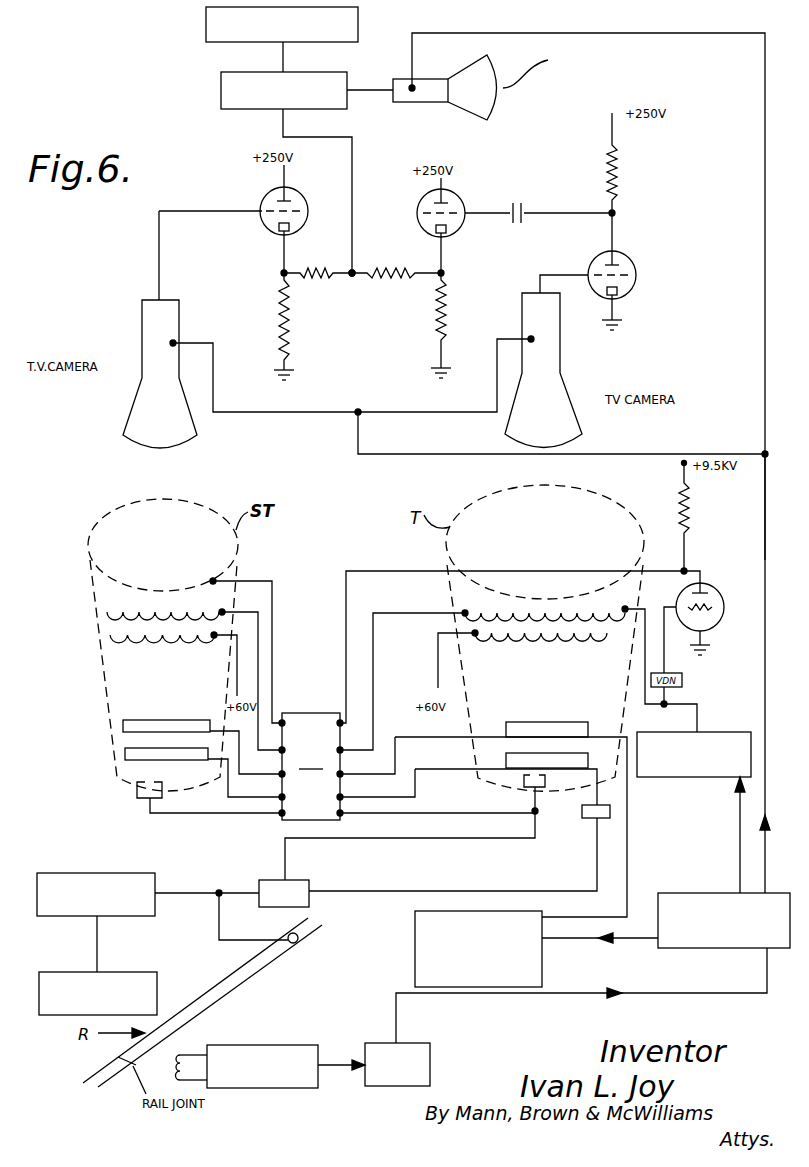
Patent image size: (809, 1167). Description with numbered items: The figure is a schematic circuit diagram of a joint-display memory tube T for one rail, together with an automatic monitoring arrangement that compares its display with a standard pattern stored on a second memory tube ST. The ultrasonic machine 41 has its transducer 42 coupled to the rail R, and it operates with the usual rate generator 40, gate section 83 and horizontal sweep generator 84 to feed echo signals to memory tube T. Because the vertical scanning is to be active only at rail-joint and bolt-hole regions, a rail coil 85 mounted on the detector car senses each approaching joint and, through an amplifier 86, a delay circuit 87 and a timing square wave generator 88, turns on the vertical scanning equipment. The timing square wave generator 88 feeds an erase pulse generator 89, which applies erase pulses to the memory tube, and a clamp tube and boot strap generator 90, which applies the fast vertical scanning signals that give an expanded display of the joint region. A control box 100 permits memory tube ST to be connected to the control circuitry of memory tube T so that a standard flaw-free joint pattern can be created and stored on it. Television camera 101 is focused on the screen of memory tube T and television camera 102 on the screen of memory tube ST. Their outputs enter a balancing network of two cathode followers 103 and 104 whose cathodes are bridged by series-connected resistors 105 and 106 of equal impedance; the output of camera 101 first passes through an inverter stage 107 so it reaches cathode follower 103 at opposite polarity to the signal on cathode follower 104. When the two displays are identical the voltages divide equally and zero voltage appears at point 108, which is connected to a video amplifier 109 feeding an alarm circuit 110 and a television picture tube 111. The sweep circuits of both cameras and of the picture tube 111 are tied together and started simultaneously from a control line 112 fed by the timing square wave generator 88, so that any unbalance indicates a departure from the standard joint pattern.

The alarm circuit 110 is at (358, 15).
The video amplifier 109 is at (221, 93).
The television picture tube 111 is at (490, 118).
The cathode follower 104 is at (296, 192).
The cathode follower 103 is at (463, 203).
The resistor 105 is at (410, 256).
The resistor 106 is at (320, 283).
The point 108 is at (355, 283).
The inverter stage 107 is at (636, 268).
The television camera 102 is at (198, 432).
The television camera 101 is at (575, 395).
The control line 112 is at (765, 515).
The control box 100 is at (311, 766).
The erase pulse generator 89 is at (740, 732).
The timing square wave generator 88 is at (715, 893).
The horizontal sweep generator 84 is at (590, 818).
The gate section 83 is at (305, 880).
The ultrasonic machine 41 is at (148, 873).
The rate generator 40 is at (157, 993).
The transducer 42 is at (298, 940).
The amplifier 86 is at (300, 1045).
The rail coil 85 is at (178, 1064).
The delay circuit 87 is at (425, 1043).
The clamp tube and boot strap generator 90 is at (542, 967).